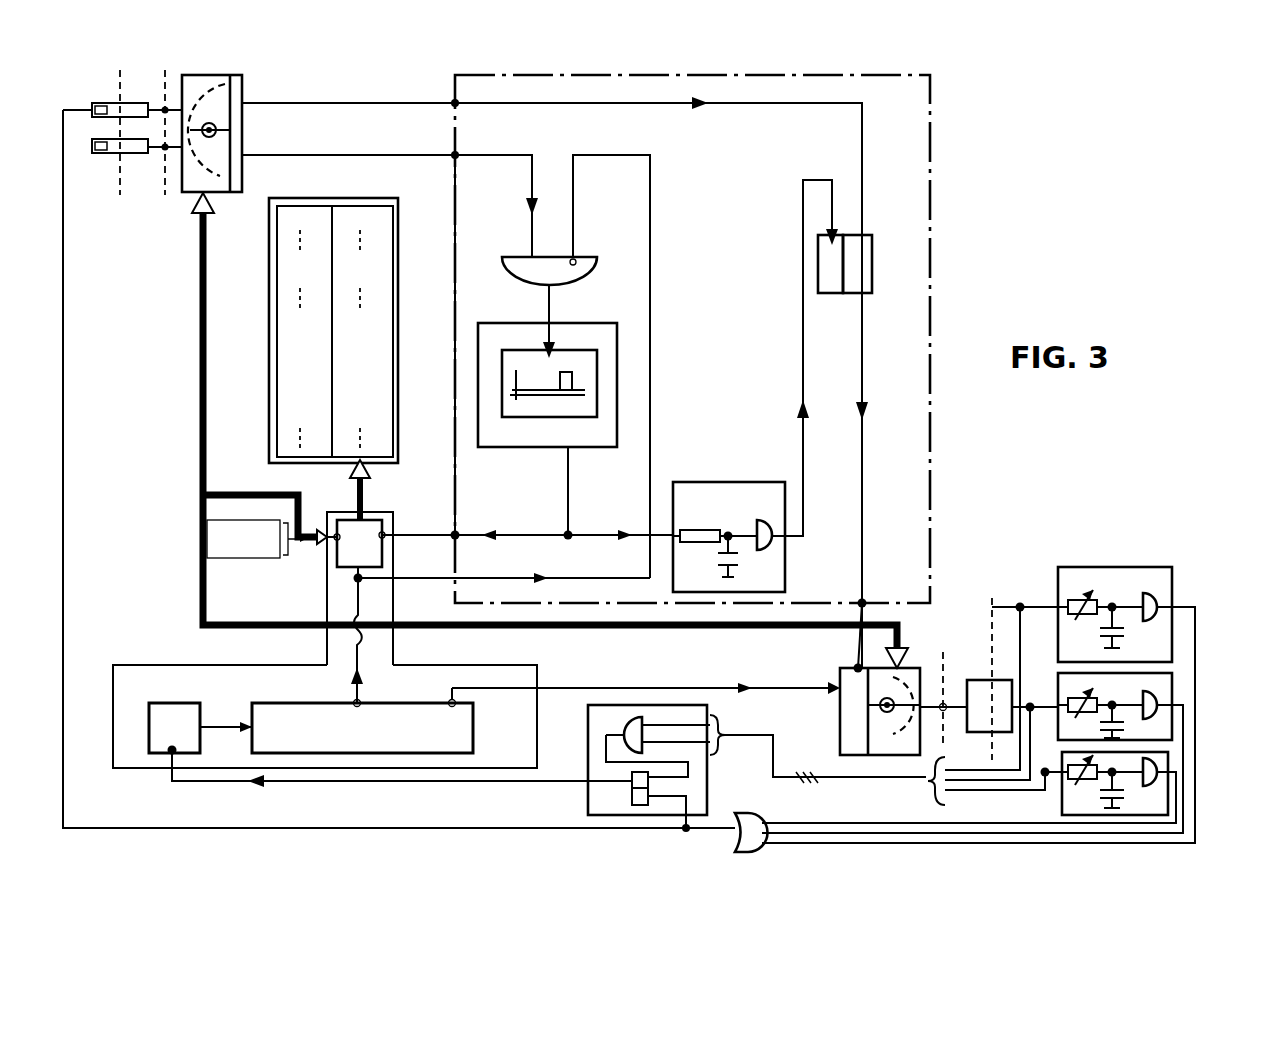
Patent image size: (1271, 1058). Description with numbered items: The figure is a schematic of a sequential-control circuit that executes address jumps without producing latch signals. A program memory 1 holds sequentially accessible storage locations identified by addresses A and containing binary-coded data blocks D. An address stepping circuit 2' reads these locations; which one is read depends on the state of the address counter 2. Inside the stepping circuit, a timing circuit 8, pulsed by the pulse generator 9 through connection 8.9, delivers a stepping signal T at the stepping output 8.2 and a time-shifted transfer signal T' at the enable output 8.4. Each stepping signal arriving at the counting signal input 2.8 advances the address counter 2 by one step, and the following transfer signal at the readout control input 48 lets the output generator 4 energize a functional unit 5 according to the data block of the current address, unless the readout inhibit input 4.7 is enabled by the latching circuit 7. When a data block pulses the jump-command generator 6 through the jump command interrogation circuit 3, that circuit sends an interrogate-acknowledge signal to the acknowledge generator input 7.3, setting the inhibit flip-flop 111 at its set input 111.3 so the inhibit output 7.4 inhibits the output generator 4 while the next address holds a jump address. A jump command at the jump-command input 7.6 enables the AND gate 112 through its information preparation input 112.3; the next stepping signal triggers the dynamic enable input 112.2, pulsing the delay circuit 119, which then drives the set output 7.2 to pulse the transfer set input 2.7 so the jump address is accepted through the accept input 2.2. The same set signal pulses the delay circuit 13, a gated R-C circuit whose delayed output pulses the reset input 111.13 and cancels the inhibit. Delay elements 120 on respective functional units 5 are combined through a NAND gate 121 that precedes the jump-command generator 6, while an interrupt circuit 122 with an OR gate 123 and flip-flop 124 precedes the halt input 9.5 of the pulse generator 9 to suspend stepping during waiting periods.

The jump-command generator 6 is at (135, 170).
The jump command interrogation circuit 3 is at (253, 84).
The program memory 1 is at (276, 204).
The address counter 2 is at (300, 588).
The accept input 2.2 is at (346, 522).
The transfer set input 2.7 is at (385, 534).
The counting signal input 2.8 is at (366, 578).
The address stepping circuit 2' is at (306, 662).
The latching circuit 7 is at (856, 139).
The acknowledge generator input 7.3 is at (453, 103).
The jump-command input 7.6 is at (453, 156).
The set output 7.2 is at (457, 534).
The inhibit output 7.4 is at (864, 604).
The AND gate 112 is at (550, 263).
The information preparation input 112.3 is at (521, 256).
The dynamic enable input 112.2 is at (582, 258).
The delay circuit 119 is at (608, 333).
The delay circuit 13 is at (715, 495).
The inhibit flip-flop 111 is at (834, 294).
The reset input 111.13 is at (826, 240).
The set input 111.3 is at (864, 238).
The output generator 4 is at (878, 755).
The readout inhibit input 4.7 is at (856, 666).
The readout control input 48 is at (840, 689).
The functional unit 5 is at (982, 690).
The delay elements 120 is at (1036, 808).
The NAND gate 121 is at (756, 818).
The interrupt circuit 122 is at (605, 712).
The OR gate 123 is at (640, 717).
The flip-flop 124 is at (632, 796).
The timing circuit 8 is at (307, 720).
The pulse generator 9 is at (168, 712).
The stepping output 8.2 is at (362, 702).
The enable output 8.4 is at (452, 700).
The halt input 9.5 is at (167, 752).
The timing circuit input 8.9 is at (249, 733).